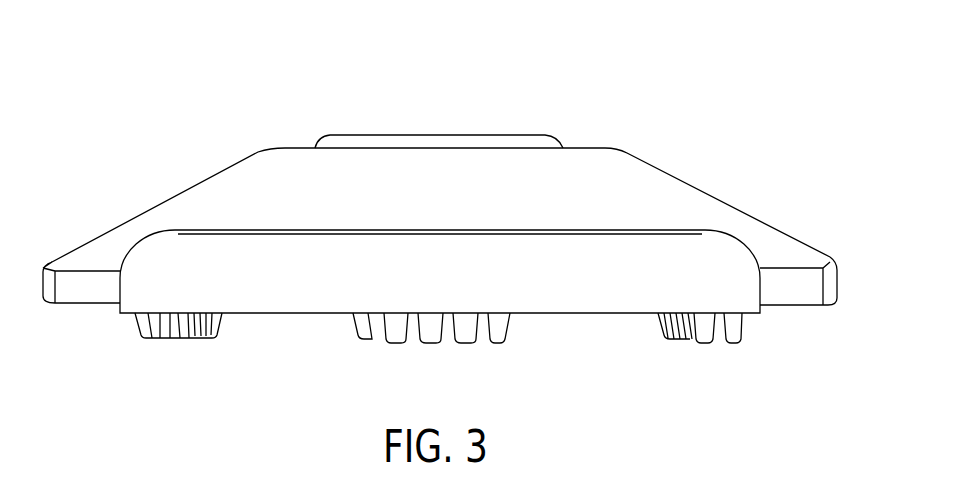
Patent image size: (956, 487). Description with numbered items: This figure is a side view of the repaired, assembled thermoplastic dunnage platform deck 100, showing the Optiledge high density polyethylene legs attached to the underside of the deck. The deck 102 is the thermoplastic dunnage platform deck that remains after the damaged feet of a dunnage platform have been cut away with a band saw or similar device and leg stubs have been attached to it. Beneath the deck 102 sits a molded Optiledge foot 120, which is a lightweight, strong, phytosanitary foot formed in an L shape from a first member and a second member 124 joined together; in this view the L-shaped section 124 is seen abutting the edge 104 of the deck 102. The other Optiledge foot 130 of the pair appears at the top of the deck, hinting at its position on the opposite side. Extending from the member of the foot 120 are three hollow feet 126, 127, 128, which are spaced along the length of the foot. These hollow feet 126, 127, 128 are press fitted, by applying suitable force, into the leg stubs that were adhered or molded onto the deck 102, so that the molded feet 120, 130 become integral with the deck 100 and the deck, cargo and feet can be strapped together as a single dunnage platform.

The thermoplastic dunnage platform deck 100 is at (560, 79).
The thermoplastic dunnage platform deck 102 is at (475, 192).
The edge of the thermoplastic dunnage platform deck 104 is at (795, 287).
The Optiledge foot 120 is at (688, 212).
The second member 124 is at (367, 268).
The hollow foot 126 is at (175, 330).
The hollow foot 127 is at (463, 335).
The hollow foot 128 is at (678, 335).
The Optiledge foot 130 is at (393, 113).